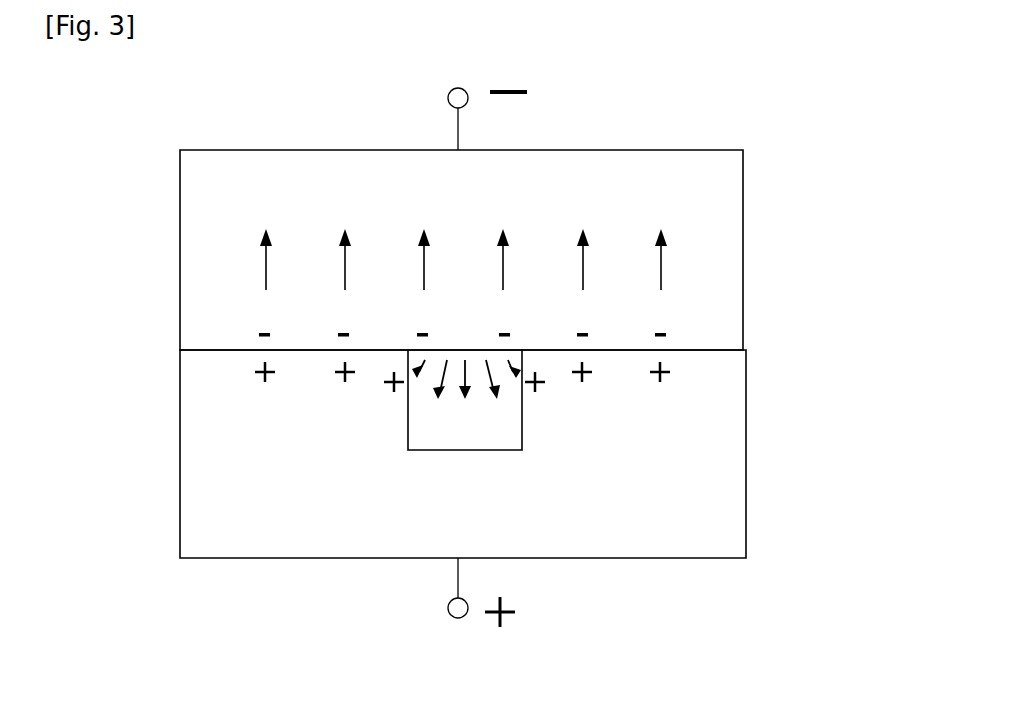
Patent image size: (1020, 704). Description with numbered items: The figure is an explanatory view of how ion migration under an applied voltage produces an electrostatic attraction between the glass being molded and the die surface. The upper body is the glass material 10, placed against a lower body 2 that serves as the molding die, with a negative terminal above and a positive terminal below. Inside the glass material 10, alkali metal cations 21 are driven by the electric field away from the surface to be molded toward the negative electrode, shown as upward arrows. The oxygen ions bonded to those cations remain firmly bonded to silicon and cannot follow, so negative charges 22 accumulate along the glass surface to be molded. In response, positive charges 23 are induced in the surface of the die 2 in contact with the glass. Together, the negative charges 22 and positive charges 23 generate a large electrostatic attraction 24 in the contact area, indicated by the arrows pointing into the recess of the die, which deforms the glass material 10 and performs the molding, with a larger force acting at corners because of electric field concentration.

The substrate 2 is at (222, 412).
The glass material 10 is at (222, 262).
The cations 21 is at (597, 177).
The negative charges 22 is at (685, 328).
The positive charges 23 is at (685, 367).
The electrostatic attraction 24 is at (488, 400).